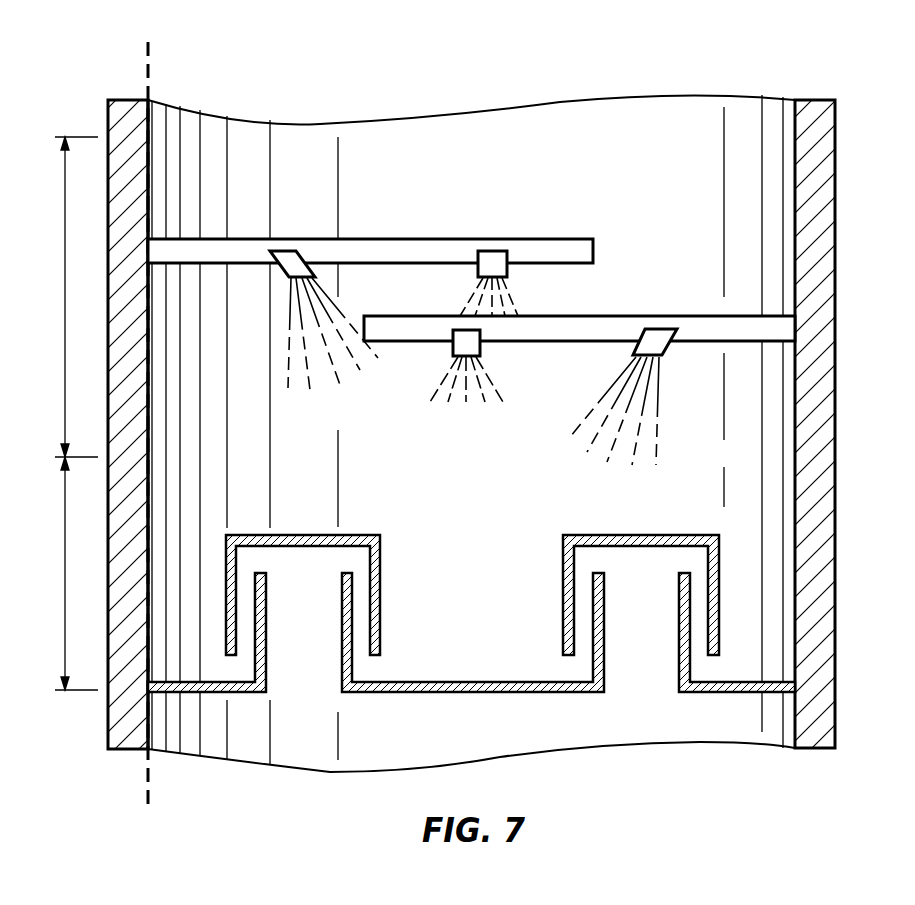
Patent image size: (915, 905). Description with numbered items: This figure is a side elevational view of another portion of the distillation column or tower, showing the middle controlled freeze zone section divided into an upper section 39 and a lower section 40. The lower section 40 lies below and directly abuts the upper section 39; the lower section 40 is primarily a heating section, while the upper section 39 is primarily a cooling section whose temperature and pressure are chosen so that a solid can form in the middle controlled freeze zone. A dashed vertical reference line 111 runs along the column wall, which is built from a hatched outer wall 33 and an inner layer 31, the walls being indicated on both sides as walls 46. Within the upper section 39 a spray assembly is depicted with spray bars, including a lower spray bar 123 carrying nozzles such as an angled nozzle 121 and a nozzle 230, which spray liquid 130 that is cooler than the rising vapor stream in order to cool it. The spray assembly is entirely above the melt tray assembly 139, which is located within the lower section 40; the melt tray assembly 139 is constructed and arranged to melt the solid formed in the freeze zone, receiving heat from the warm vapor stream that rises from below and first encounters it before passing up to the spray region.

The centerline / axis 111 is at (173, 40).
The side walls 46 is at (106, 118).
The upper section 39 is at (63, 292).
The lower section 40 is at (63, 572).
The inner wall layer 31 is at (793, 218).
The outer wall 33 is at (838, 442).
The lower spray bar 123 is at (766, 316).
The angled spray nozzle 121 is at (663, 352).
The liquid 130 is at (331, 374).
The spray nozzle 230 is at (462, 408).
The melt tray assembly 139 is at (467, 612).